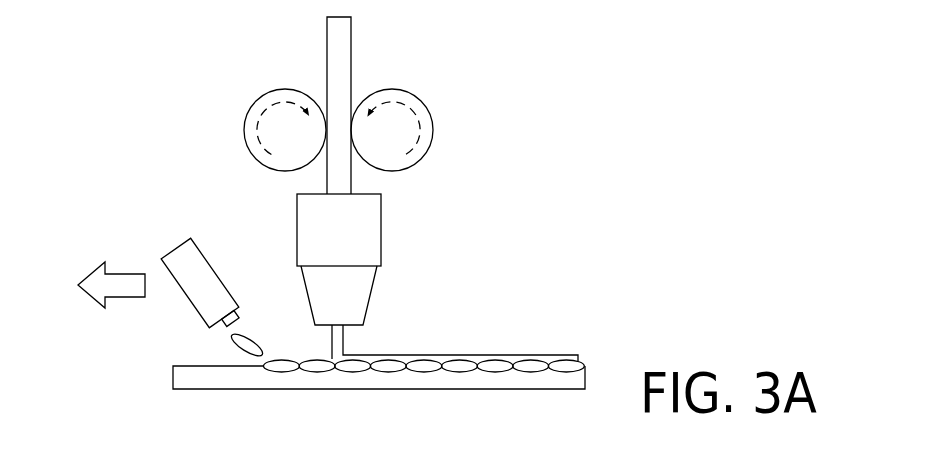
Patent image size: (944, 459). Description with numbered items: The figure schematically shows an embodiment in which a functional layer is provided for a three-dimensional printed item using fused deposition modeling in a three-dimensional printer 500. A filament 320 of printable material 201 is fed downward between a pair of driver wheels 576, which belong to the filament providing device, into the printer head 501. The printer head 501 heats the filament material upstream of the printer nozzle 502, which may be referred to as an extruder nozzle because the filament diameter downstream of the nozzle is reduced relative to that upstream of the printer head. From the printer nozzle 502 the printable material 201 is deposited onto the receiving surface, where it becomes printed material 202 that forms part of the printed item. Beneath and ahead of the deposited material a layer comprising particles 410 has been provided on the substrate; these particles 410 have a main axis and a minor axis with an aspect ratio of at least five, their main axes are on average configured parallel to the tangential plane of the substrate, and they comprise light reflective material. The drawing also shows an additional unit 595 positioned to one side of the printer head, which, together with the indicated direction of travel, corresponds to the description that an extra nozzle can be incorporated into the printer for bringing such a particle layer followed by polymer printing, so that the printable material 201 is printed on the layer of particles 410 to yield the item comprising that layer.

The 3D printer 500 is at (612, 157).
The driver wheels 576 is at (430, 95).
The filament 320 is at (363, 182).
The printer head 501 is at (388, 233).
The printer nozzle 502 is at (372, 288).
The 3D printable material 201 is at (325, 345).
The 3D printed material 202 is at (558, 348).
The particles 410 is at (257, 338).
The energy source 595 is at (182, 240).